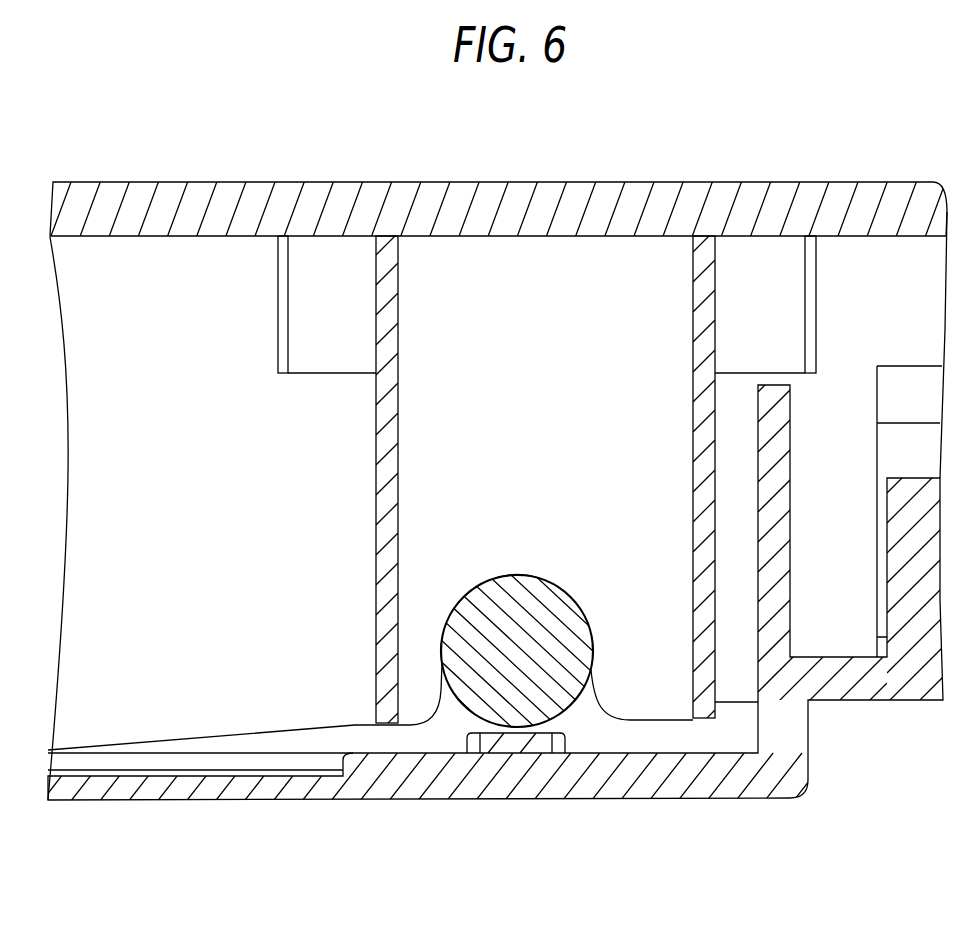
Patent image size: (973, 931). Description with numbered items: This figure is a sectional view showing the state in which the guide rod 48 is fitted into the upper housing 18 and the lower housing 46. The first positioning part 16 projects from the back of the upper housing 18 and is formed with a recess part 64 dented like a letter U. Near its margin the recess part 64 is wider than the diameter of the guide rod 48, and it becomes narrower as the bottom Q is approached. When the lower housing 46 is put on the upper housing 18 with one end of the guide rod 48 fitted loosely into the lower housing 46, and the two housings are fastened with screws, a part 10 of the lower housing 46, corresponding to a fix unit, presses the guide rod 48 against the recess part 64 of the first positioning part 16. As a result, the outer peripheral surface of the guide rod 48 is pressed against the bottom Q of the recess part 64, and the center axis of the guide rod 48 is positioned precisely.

The upper housing 18 is at (274, 194).
The first positioning part 16 is at (377, 470).
The lower housing 46 is at (285, 790).
The part surrounded by the first rib 10 is at (527, 724).
The guide rod 48 is at (570, 627).
The recess part 64 is at (483, 600).
The bottom Q is at (508, 573).